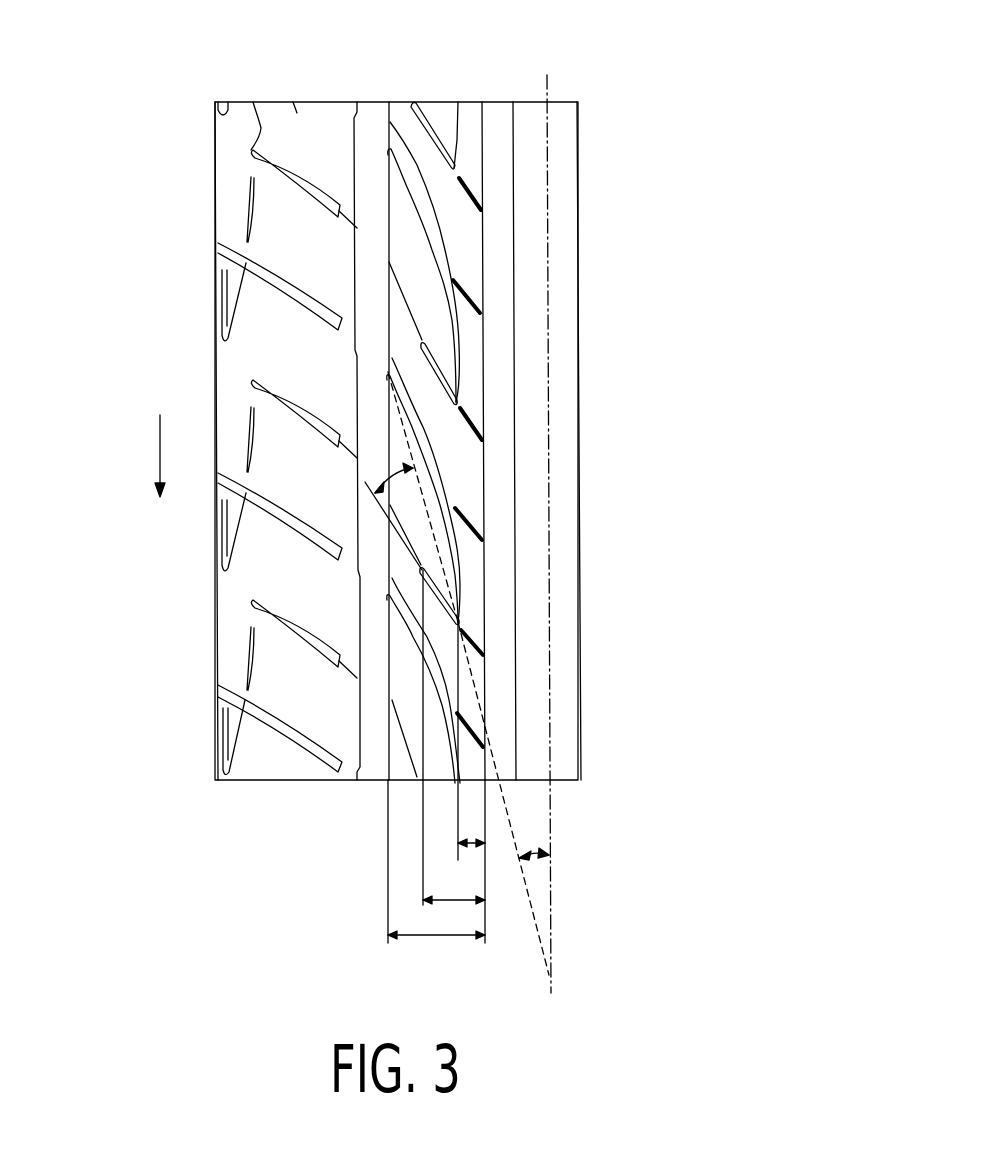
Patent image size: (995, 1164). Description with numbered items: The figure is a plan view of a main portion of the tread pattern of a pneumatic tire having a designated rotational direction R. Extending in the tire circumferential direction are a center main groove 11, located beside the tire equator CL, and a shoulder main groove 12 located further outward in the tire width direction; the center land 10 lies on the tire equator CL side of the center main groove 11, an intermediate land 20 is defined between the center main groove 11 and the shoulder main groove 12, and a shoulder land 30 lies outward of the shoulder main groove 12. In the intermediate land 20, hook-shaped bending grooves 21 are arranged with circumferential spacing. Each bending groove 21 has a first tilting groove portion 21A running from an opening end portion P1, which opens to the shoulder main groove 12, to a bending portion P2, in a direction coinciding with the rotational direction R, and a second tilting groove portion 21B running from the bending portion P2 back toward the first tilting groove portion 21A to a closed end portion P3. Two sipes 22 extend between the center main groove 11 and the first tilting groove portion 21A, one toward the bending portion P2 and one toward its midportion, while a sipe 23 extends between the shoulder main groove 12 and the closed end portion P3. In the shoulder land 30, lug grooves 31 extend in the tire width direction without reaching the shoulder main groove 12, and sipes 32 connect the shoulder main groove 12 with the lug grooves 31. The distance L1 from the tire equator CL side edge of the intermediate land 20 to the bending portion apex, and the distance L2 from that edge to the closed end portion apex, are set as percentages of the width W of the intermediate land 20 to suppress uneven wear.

The center land 10 is at (560, 113).
The center main groove 11 is at (500, 115).
The shoulder main groove 12 is at (377, 123).
The intermediate land 20 is at (435, 113).
The bending groove 21 is at (528, 452).
The first tilting groove portion 21A is at (445, 266).
The second tilting groove portion 21B is at (447, 483).
The sipe 22 is at (468, 186).
The sipe 23 is at (400, 298).
The shoulder land 30 is at (298, 115).
The lug groove 31 is at (262, 143).
The sipe 32 is at (355, 225).
The opening end portion P1 is at (399, 366).
The bending portion P2 is at (460, 620).
The closed end portion P3 is at (425, 571).
The tire equator CL is at (541, 520).
The rotational direction R is at (157, 441).
The width of the intermediate land W is at (436, 871).
The distance L1 is at (471, 746).
The distance L2 is at (454, 748).